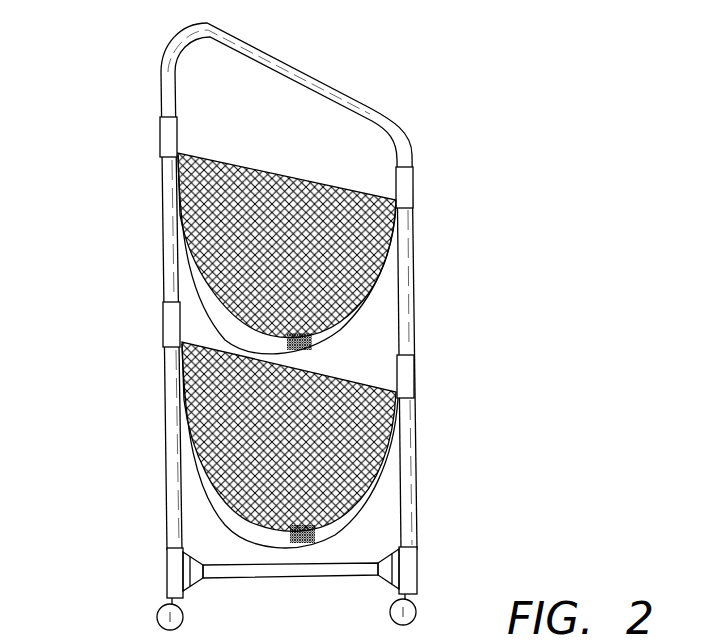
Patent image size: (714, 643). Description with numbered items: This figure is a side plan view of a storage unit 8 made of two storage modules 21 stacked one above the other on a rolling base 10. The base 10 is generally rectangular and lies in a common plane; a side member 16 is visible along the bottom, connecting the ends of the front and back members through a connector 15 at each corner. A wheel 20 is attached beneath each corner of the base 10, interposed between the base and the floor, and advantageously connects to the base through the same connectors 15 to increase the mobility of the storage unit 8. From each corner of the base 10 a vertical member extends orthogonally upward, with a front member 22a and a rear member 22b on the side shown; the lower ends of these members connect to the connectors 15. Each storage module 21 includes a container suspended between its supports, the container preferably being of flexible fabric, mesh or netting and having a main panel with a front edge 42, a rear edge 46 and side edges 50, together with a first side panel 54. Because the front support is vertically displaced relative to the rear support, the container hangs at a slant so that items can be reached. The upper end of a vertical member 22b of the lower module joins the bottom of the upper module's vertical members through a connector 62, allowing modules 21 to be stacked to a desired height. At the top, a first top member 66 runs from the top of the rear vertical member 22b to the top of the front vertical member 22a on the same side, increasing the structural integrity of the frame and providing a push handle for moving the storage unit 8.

The storage unit 8 is at (480, 68).
The base 10 is at (335, 565).
The connector 15 is at (413, 573).
The side member 16 is at (297, 570).
The wheel 20 is at (413, 607).
The storage module 21 is at (452, 310).
The front vertical member 22a is at (412, 252).
The rear vertical member 22b is at (166, 218).
The front edge 42 is at (397, 200).
The rear edge 46 is at (180, 153).
The side edge 50 is at (197, 445).
The first side panel 54 is at (198, 268).
The connector 62 is at (410, 376).
The first top member 66 is at (318, 68).